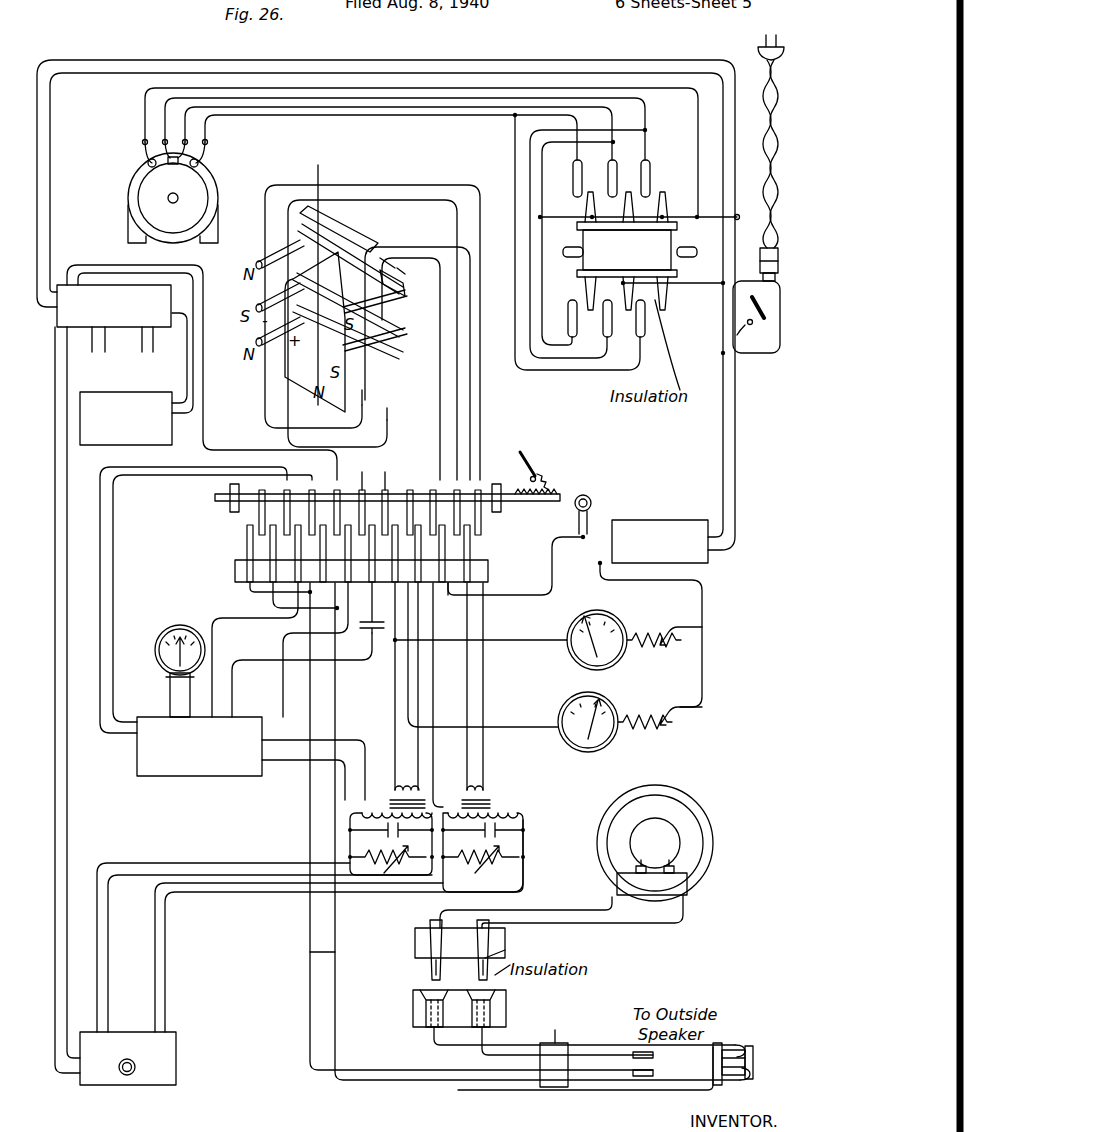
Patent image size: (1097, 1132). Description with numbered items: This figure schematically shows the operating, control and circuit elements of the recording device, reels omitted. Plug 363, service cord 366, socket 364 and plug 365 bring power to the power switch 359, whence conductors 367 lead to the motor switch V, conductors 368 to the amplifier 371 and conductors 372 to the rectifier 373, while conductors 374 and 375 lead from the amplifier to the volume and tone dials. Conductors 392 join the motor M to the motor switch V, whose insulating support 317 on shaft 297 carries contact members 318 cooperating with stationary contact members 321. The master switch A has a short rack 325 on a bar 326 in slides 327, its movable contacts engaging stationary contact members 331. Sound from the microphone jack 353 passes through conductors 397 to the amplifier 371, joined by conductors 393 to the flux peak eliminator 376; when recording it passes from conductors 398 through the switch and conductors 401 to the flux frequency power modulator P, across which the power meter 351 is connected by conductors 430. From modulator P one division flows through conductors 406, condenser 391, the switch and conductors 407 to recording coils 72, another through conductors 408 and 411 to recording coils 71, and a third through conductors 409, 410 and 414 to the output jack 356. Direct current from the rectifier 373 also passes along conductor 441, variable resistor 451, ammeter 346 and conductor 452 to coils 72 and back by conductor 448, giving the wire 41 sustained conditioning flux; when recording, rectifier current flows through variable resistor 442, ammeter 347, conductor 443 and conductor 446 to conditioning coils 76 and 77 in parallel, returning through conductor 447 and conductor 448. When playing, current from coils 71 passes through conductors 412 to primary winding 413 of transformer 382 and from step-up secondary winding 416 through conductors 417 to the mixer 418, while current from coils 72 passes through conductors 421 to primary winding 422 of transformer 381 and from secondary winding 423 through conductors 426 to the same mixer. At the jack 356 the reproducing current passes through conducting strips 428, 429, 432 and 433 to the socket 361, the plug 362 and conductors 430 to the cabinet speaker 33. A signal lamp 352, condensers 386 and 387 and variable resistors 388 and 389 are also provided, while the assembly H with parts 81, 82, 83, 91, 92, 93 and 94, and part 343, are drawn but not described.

The cabinet speaker 33 is at (712, 856).
The magnet block 41 is at (312, 402).
The magnet bar 71 is at (265, 245).
The knurled end 72 is at (300, 244).
The magnet bar 76 is at (268, 298).
The magnet bar 77 is at (268, 368).
The end block 81 is at (278, 240).
The rod end 82 is at (258, 262).
The top plate 83 is at (340, 246).
The magnet bar 91 is at (412, 329).
The terminal 92 is at (414, 376).
The rod end 93 is at (258, 305).
The rod end 94 is at (258, 339).
The transformer stud 297 is at (565, 255).
The transformer 317 is at (677, 238).
The tube 318 is at (645, 190).
The tube 321 is at (612, 163).
The ratchet 325 is at (552, 494).
The insulation bar 326 is at (252, 503).
The insulator 327 is at (230, 488).
The socket base 331 is at (500, 518).
The lever 343 is at (527, 453).
The meter 346 is at (570, 660).
The meter 347 is at (605, 748).
The power meter 351 is at (155, 657).
The socket 352 is at (590, 500).
The microphone jack 353 is at (136, 1067).
The connector 356 is at (735, 1050).
The power switch 359 is at (763, 344).
The receptacle 361 is at (413, 1000).
The plug 362 is at (415, 943).
The power plug 363 is at (758, 50).
The switch 364 is at (778, 248).
The switch base 365 is at (776, 277).
The power cord 366 is at (775, 177).
The wire 367 is at (705, 214).
The wire loop 368 is at (48, 140).
The wire 371 is at (57, 322).
The wire 372 is at (723, 446).
The rectifier 373 is at (662, 520).
The amplifier lead 374 is at (114, 327).
The amplifier lead 375 is at (147, 348).
The peak eliminator 376 is at (88, 446).
The transformer 381 is at (368, 793).
The transformer 382 is at (538, 793).
The capacitor 386 is at (375, 830).
The capacitor 387 is at (523, 828).
The variable resistor 388 is at (395, 870).
The variable resistor 389 is at (483, 869).
The capacitor 391 is at (334, 650).
The motor wires 392 is at (322, 101).
The wire 393 is at (185, 374).
The wire 397 is at (60, 838).
The wire 398 is at (205, 410).
The wire 401 is at (232, 670).
The wire 406 is at (282, 692).
The wire 407 is at (455, 403).
The wire 408 is at (357, 760).
The wire 409 is at (108, 580).
The wire 410 is at (262, 590).
The wire loop 411 is at (395, 240).
The wire 412 is at (450, 624).
The wire 413 is at (475, 760).
The wire 414 is at (310, 952).
The tank circuit 416 is at (523, 812).
The wire 417 is at (160, 965).
The wire 418 is at (118, 1022).
The wire 421 is at (418, 697).
The primary coil 422 is at (412, 792).
The tank circuit 423 is at (352, 812).
The wire 426 is at (102, 954).
The cable wire 428 is at (573, 1043).
The cable wire 429 is at (602, 1052).
The wire 430 is at (170, 690).
The cable wire 432 is at (590, 1076).
The bracket 433 is at (622, 1080).
The wire 441 is at (702, 610).
The variable resistor 442 is at (655, 712).
The wire 443 is at (512, 727).
The terminal 446 is at (372, 410).
The terminal 447 is at (378, 440).
The wire 448 is at (512, 600).
The variable resistor 451 is at (652, 633).
The wire 452 is at (520, 634).
The motor M is at (128, 148).
The magnet assembly H is at (435, 170).
The tube section V is at (580, 383).
The socket assembly A is at (290, 447).
The frequency power modulator P is at (150, 790).